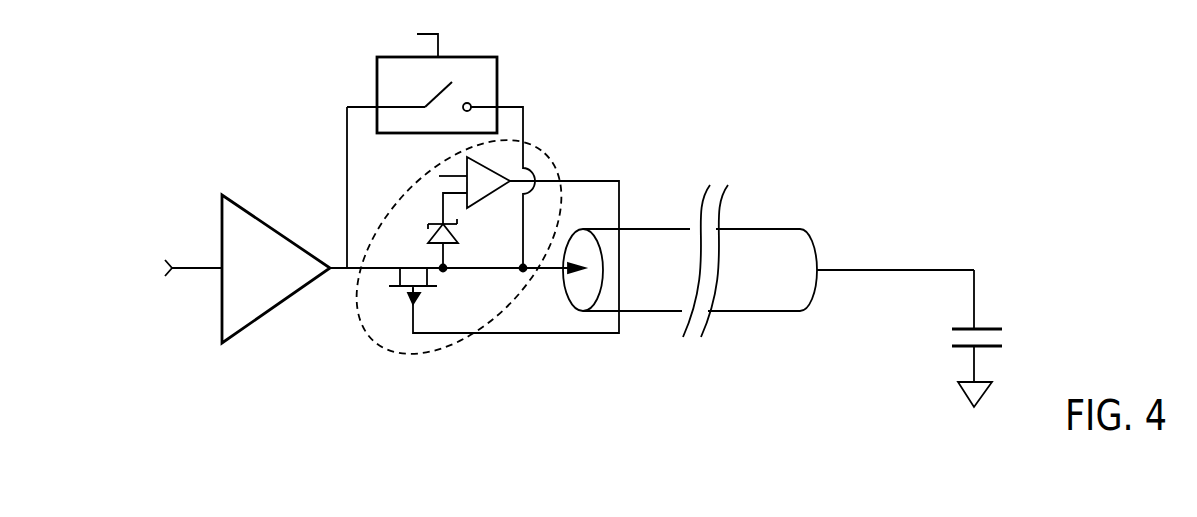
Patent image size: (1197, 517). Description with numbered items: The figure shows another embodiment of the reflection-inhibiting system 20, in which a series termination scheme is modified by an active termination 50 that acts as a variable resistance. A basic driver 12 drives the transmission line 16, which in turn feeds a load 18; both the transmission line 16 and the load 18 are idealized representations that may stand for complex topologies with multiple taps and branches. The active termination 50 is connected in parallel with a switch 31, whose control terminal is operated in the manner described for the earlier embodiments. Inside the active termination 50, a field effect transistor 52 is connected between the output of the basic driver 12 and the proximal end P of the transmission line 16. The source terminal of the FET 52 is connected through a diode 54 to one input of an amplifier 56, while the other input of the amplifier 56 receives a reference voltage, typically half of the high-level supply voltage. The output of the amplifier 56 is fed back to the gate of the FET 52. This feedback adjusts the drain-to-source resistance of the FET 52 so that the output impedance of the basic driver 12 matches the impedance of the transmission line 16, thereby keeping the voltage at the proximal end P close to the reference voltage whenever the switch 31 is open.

The basic driver 12 is at (253, 297).
The transmission line 16 is at (653, 293).
The load 18 is at (957, 337).
The system 20 is at (668, 68).
The switch 31 is at (487, 82).
The active termination 50 is at (540, 145).
The field effect transistor (FET) 52 is at (408, 290).
The diode 54 is at (450, 232).
The amplifier 56 is at (492, 194).
The proximal end P is at (570, 275).